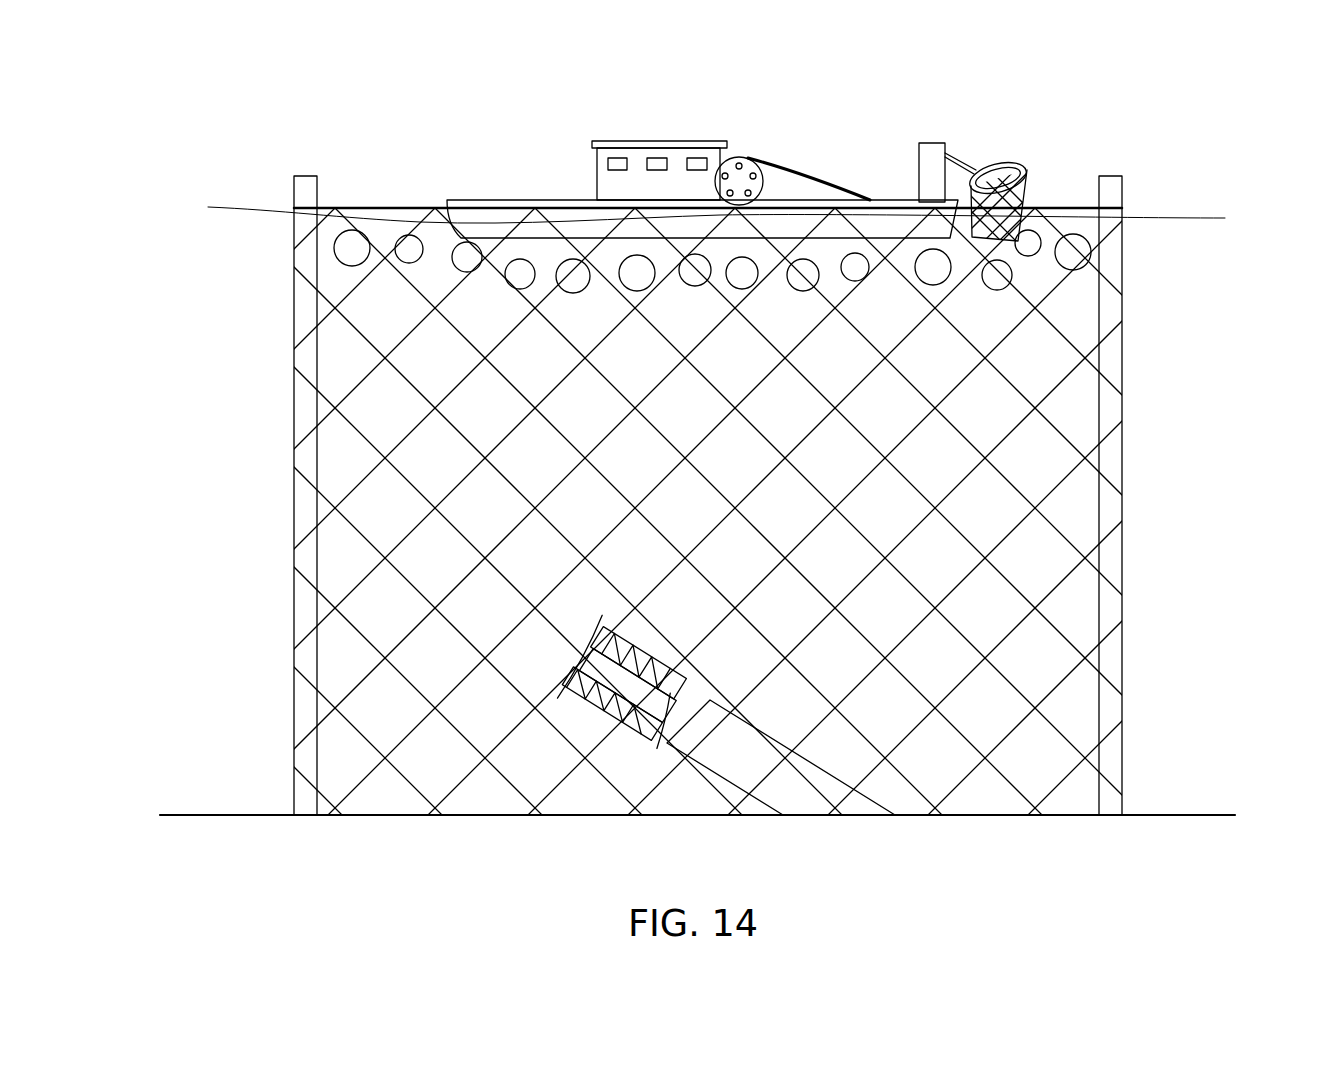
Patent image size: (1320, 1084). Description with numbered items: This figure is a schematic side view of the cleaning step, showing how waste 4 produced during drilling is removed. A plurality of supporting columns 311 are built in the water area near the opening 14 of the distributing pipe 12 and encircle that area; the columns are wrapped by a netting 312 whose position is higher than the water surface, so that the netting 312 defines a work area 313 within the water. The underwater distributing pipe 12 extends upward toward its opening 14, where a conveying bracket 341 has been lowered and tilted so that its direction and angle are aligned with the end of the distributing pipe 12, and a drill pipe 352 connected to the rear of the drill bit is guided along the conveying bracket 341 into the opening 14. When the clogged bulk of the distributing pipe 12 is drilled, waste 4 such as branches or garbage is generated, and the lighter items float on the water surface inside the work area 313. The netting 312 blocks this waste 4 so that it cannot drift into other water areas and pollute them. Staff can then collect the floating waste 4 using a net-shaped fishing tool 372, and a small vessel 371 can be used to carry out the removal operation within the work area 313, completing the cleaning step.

The supporting columns 311 is at (294, 318).
The netting 312 is at (343, 207).
The work area 313 is at (1087, 527).
The waste 4 is at (410, 237).
The small vessel 371 is at (612, 140).
The net-shaped fishing tool 372 is at (1053, 135).
The conveying bracket 341 is at (622, 653).
The drill pipe 352 is at (620, 700).
The opening 14 is at (653, 740).
The distributing pipe 12 is at (842, 803).